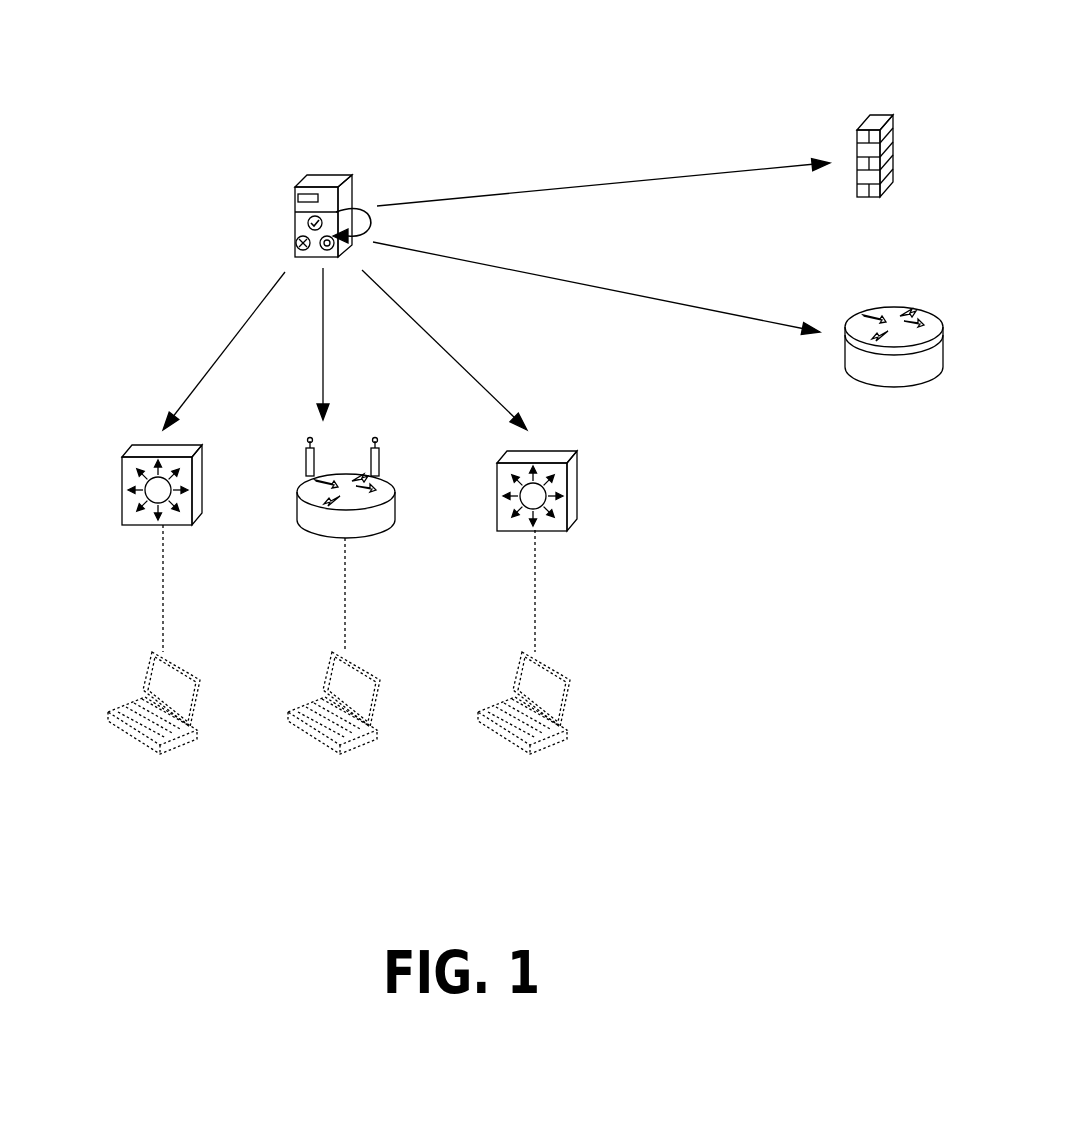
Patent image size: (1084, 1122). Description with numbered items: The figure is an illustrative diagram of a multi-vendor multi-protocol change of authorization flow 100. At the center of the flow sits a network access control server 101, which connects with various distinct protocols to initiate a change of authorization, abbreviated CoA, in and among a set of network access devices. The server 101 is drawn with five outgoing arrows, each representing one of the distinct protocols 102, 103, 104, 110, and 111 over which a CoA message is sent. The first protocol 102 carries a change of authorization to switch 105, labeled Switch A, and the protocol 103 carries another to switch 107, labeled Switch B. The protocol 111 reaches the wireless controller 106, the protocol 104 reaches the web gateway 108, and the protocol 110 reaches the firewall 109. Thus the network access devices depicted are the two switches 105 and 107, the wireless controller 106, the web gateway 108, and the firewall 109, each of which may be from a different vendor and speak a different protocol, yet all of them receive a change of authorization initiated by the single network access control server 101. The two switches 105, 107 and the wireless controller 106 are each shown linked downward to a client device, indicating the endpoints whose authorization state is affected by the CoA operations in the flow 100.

The change of authorization flow 100 is at (519, 32).
The network access control server 101 is at (293, 220).
The protocol 102 is at (197, 378).
The protocol 103 is at (443, 342).
The protocol 104 is at (505, 266).
The switch 105 is at (120, 495).
The wireless controller 106 is at (397, 510).
The switch 107 is at (577, 500).
The web gateway 108 is at (845, 360).
The firewall 109 is at (857, 155).
The protocol 110 is at (503, 193).
The protocol 111 is at (320, 300).